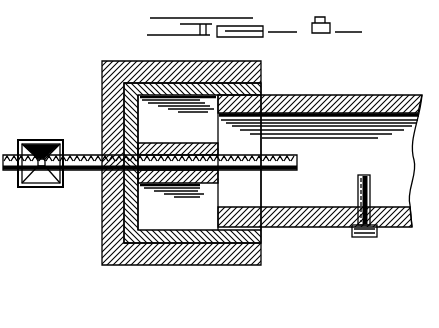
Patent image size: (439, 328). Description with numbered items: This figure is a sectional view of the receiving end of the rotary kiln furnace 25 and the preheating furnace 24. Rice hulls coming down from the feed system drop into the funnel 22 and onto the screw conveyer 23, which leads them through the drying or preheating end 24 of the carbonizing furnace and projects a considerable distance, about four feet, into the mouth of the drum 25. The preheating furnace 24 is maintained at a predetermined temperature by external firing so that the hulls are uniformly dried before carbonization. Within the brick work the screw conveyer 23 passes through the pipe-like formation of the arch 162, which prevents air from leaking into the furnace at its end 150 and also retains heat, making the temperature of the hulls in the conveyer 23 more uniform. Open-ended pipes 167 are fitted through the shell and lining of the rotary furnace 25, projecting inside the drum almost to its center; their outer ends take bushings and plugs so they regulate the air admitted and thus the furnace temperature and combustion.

The funnel 22 is at (42, 146).
The screw conveyer 23 is at (258, 167).
The preheating furnace 24 is at (128, 68).
The rotary kiln furnace 25 is at (345, 97).
The end of furnace 150 is at (237, 208).
The arch 162 is at (198, 194).
The pipes 167 is at (358, 182).